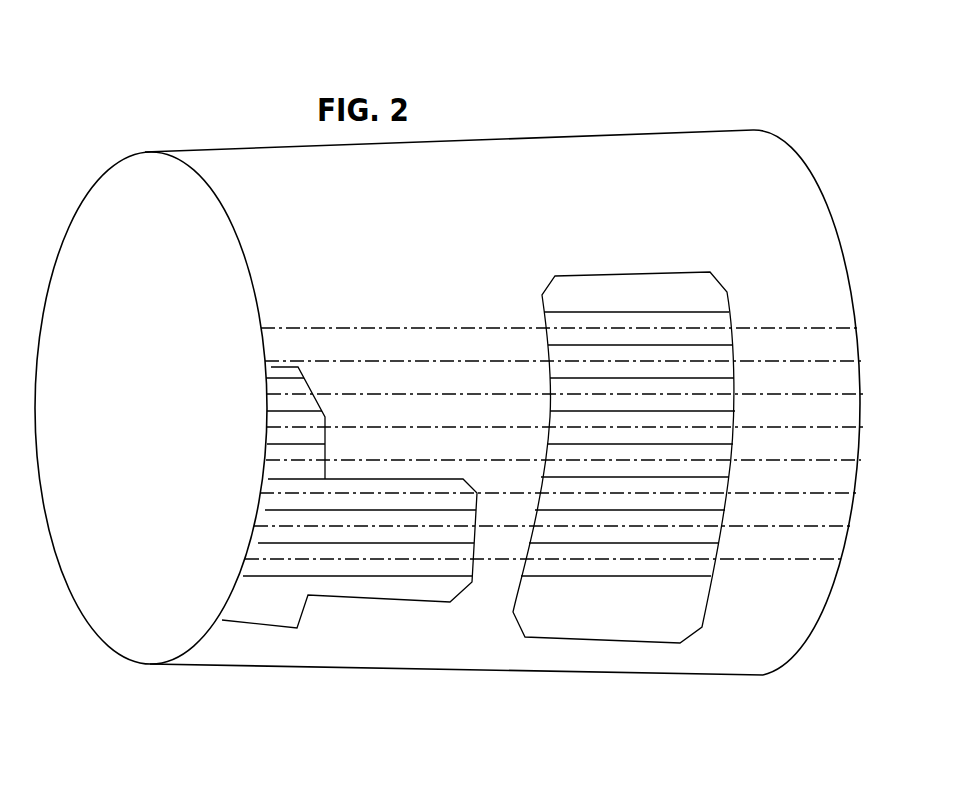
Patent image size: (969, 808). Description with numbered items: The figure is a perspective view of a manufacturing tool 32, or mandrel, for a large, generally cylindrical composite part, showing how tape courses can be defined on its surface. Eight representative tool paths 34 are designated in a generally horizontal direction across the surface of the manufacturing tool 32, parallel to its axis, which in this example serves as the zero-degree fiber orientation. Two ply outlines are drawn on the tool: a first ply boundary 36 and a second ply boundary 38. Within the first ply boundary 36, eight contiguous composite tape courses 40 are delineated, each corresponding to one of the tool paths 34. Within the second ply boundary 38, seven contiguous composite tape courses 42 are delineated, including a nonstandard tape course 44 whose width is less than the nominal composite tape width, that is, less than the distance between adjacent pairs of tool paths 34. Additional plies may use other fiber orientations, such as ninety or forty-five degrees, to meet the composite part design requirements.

The manufacturing tool 32 is at (361, 219).
The tool paths 34 is at (787, 329).
The first ply boundary 36 is at (578, 275).
The second ply boundary 38 is at (382, 601).
The composite tape courses 40 is at (682, 313).
The composite tape courses 42 is at (267, 586).
The nonstandard tape course 44 is at (281, 372).